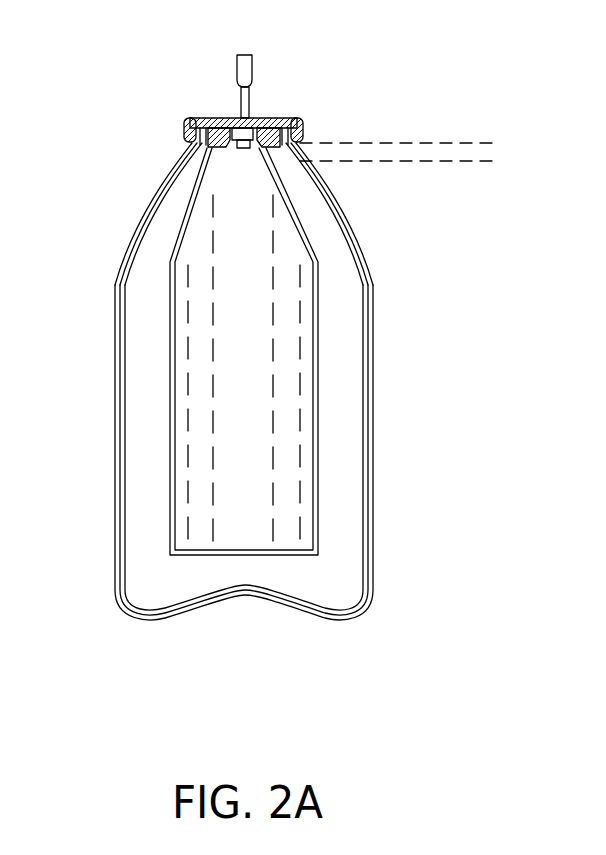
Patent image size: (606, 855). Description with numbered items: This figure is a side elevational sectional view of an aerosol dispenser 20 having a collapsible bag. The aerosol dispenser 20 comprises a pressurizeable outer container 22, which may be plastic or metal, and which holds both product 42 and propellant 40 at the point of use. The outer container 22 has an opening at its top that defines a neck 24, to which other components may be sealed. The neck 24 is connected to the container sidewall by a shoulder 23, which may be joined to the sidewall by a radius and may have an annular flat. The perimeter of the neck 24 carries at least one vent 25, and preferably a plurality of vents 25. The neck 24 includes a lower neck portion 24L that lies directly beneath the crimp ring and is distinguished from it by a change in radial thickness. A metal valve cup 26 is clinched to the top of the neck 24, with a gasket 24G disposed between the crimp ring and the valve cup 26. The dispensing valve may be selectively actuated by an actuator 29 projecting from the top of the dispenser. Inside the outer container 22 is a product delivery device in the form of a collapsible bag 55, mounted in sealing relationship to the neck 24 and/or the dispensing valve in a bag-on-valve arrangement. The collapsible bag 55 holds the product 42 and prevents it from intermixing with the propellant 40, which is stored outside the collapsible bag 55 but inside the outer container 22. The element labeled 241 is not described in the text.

The aerosol dispenser 20 is at (232, 640).
The outer container 22 is at (368, 378).
The shoulder 23 is at (338, 217).
The neck 24 is at (300, 121).
The gasket 24G is at (278, 119).
The lower neck portion 24L is at (505, 143).
The vent 25 is at (187, 121).
The valve cup 26 is at (200, 132).
The neck wall 241 is at (200, 167).
The actuator 29 is at (237, 67).
The propellant 40 is at (147, 525).
The product 42 is at (227, 433).
The collapsible bag 55 is at (293, 302).